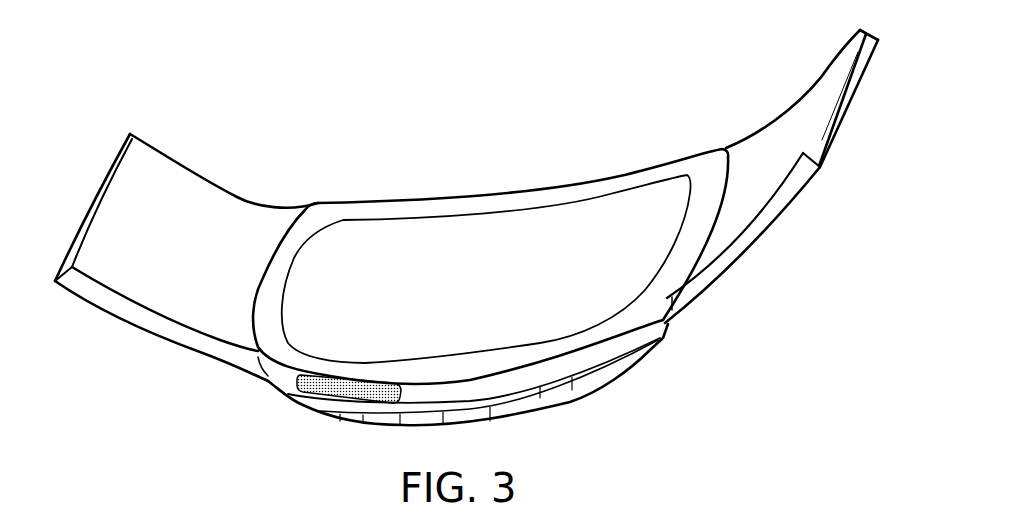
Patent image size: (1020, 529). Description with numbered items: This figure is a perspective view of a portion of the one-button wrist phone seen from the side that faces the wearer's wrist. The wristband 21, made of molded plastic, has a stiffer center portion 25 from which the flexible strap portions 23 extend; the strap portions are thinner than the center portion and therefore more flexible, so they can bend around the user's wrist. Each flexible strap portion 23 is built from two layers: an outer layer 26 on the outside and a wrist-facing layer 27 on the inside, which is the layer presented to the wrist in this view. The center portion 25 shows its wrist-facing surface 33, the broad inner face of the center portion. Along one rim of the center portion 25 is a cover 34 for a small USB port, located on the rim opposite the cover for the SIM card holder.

The wristband 21 is at (739, 298).
The flexible strap portion 23 is at (778, 238).
The center portion 25 is at (536, 192).
The outer layer 26 is at (112, 331).
The wrist-facing layer 27 is at (857, 40).
The wrist-facing surface 33 is at (494, 285).
The cover for small USB port 34 is at (290, 405).